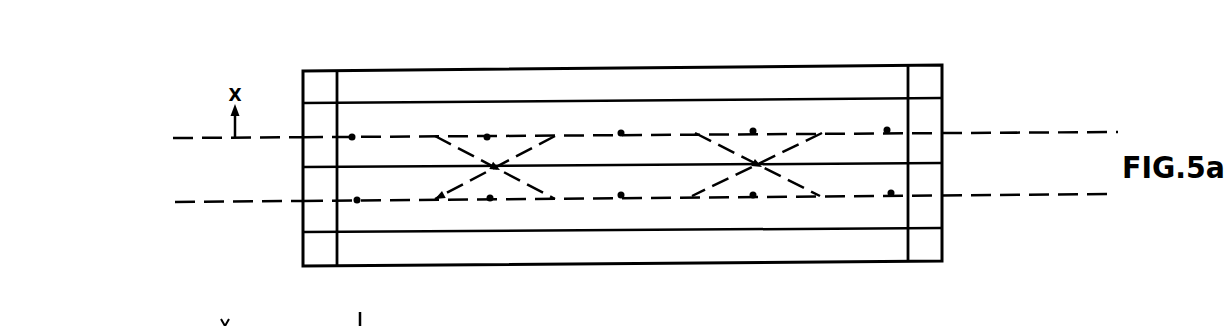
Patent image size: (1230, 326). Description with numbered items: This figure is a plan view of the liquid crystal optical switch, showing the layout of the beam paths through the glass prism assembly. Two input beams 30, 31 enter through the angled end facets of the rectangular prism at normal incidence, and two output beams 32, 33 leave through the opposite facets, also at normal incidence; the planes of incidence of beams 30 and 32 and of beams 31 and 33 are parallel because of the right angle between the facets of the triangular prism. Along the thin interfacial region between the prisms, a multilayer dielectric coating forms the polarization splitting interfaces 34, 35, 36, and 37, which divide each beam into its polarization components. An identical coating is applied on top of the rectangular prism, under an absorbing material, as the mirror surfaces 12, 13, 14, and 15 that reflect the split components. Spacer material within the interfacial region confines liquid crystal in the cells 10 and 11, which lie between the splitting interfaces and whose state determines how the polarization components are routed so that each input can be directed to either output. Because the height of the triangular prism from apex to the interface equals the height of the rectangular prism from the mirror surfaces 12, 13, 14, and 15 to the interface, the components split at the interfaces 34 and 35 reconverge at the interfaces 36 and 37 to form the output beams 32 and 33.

The liquid crystal cell 10 is at (621, 133).
The liquid crystal cell 11 is at (621, 195).
The mirror surface 12 is at (487, 137).
The mirror surface 13 is at (490, 198).
The mirror surface 14 is at (753, 131).
The mirror surface 15 is at (753, 195).
The input beam 30 is at (238, 153).
The input beam 31 is at (239, 218).
The output beam 32 is at (1030, 148).
The output beam 33 is at (1028, 213).
The polarization splitting interface 34 is at (352, 137).
The polarization splitting interface 35 is at (357, 200).
The polarization splitting interface 36 is at (887, 130).
The polarization splitting interface 37 is at (891, 193).